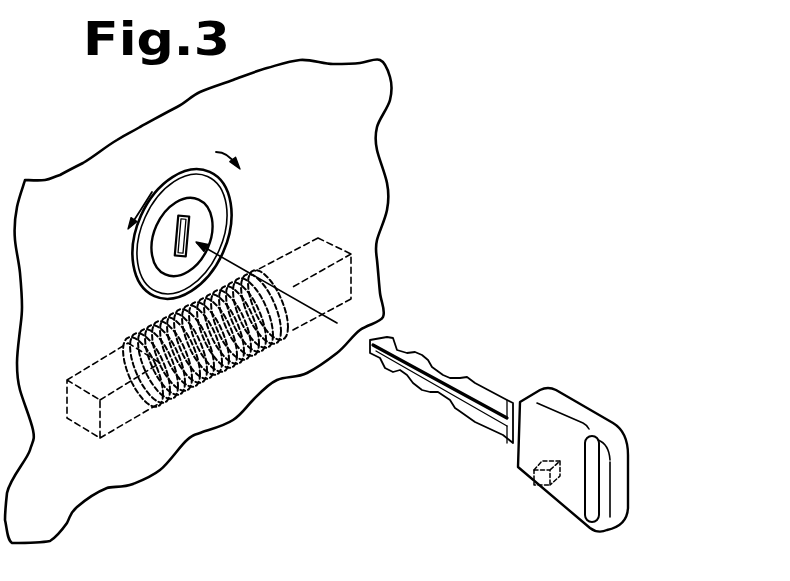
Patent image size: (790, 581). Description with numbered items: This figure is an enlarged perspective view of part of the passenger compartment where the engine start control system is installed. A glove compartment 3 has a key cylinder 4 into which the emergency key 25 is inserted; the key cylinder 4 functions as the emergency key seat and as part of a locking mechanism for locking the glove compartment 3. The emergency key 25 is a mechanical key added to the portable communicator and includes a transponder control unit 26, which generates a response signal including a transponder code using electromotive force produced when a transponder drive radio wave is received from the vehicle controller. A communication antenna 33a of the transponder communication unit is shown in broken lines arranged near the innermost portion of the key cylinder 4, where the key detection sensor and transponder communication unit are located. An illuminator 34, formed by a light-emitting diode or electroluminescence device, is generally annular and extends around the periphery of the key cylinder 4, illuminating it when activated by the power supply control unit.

The glove compartment 3 is at (374, 130).
The key cylinder 4 is at (202, 227).
The illuminator 34 is at (152, 295).
The communication antenna 33a is at (170, 407).
The emergency key 25 is at (571, 410).
The transponder control unit 26 is at (543, 487).